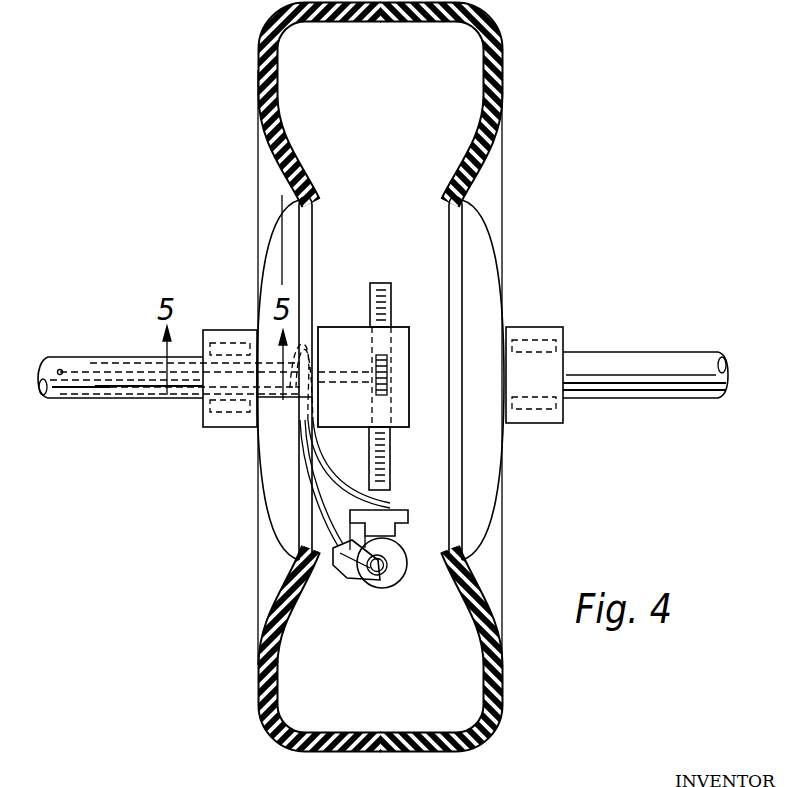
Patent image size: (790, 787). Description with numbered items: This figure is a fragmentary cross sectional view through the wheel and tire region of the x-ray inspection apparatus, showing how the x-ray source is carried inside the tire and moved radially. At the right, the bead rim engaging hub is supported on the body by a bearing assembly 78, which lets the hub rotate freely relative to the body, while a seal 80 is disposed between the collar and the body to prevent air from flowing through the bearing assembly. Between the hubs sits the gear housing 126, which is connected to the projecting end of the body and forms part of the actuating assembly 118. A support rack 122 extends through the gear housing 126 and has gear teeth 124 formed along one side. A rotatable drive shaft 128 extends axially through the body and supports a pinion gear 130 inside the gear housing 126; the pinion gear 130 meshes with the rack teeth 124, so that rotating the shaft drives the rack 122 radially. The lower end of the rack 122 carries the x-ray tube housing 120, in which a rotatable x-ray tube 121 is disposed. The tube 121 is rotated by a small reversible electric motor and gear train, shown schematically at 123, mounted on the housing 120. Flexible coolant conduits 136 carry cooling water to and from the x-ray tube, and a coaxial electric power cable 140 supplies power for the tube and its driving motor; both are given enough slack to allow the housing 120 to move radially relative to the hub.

The bearing assembly 78 is at (528, 342).
The seal 80 is at (555, 348).
The actuating assembly 118 is at (409, 338).
The x-ray tube housing 120 is at (380, 593).
The x-ray tube 121 is at (389, 583).
The support rack 122 is at (392, 299).
The motor and gear train 123 is at (396, 535).
The gear teeth 124 is at (378, 305).
The gear housing 126 is at (359, 377).
The drive shaft 128 is at (353, 385).
The pinion gear 130 is at (389, 400).
The coolant conduits 136 is at (334, 552).
The coaxial electric power cable 140 is at (341, 482).